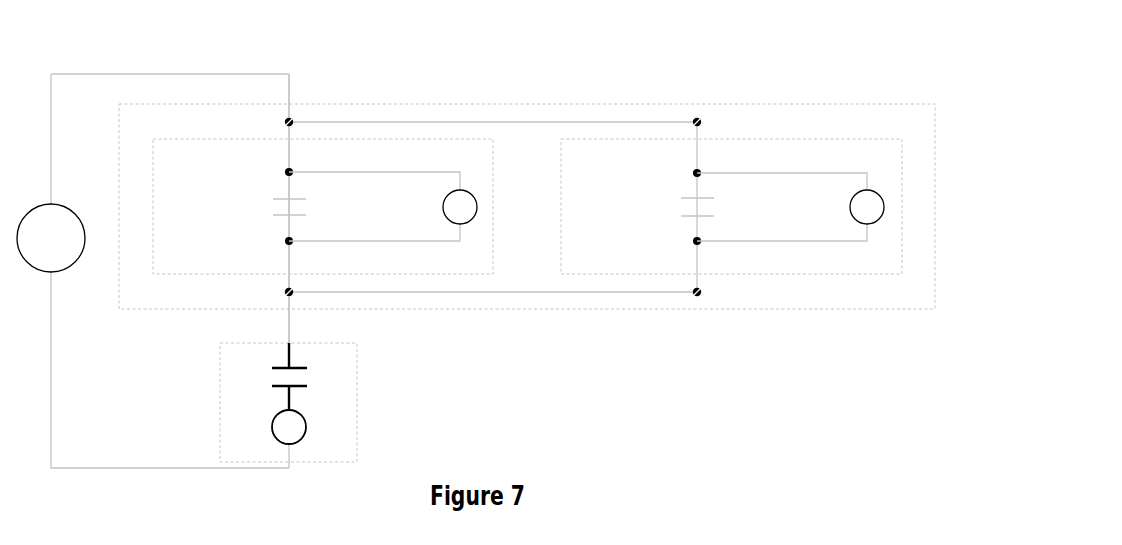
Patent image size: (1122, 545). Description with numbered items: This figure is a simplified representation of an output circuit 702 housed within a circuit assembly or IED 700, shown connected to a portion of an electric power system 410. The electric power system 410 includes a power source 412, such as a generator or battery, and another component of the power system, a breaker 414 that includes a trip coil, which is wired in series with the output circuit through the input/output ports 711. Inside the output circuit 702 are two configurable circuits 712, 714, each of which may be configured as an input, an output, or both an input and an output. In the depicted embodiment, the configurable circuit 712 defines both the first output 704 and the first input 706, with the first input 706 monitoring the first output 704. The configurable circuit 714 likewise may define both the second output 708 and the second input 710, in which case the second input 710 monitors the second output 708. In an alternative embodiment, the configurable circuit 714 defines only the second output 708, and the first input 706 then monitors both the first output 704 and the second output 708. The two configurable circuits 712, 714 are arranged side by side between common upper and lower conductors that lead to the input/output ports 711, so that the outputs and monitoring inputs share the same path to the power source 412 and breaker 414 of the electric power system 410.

The electric power system 410 is at (218, 64).
The power source 412 is at (60, 275).
The breaker 414 is at (357, 425).
The IED 700 is at (527, 209).
The output circuit 702 is at (740, 311).
The first output 704 is at (245, 228).
The first input 706 is at (416, 227).
The second output 708 is at (656, 228).
The second input 710 is at (829, 228).
The input/output port 711 is at (289, 96).
The configurable circuit 712 is at (493, 150).
The configurable circuit 714 is at (800, 140).